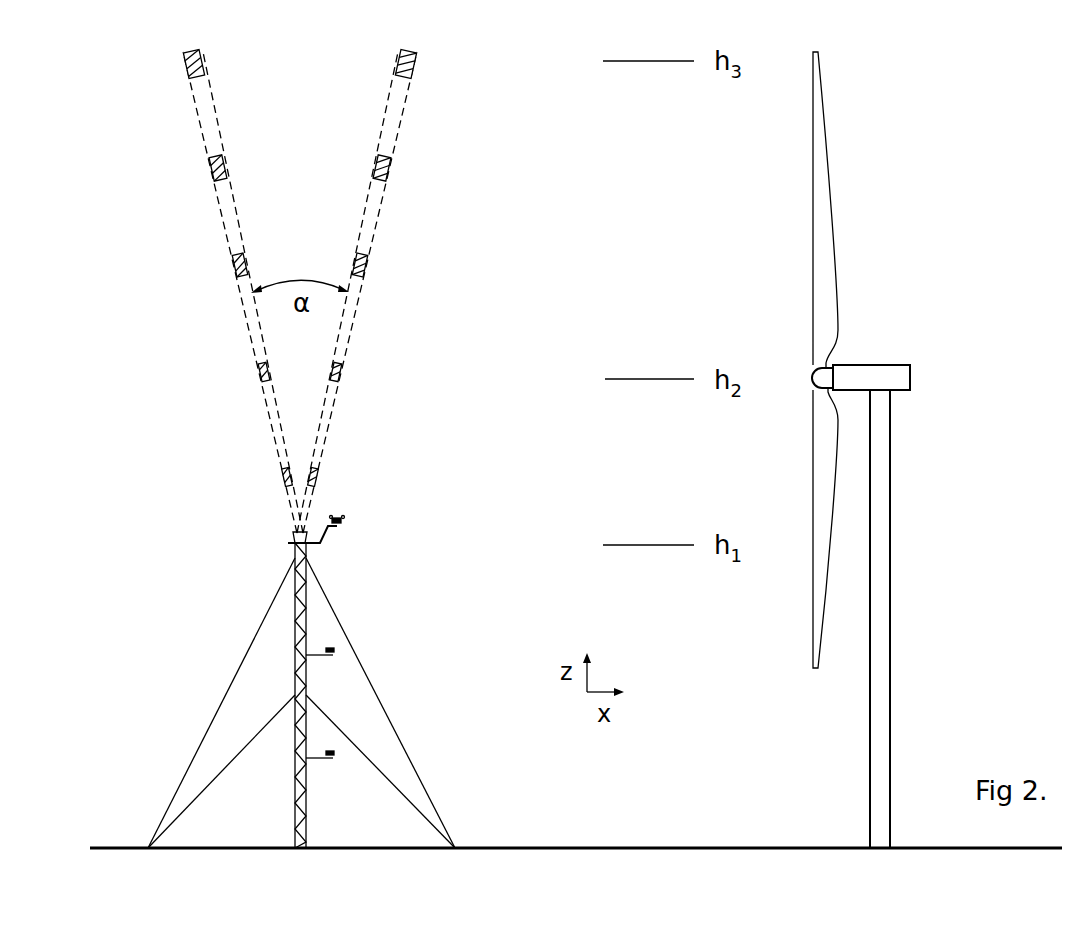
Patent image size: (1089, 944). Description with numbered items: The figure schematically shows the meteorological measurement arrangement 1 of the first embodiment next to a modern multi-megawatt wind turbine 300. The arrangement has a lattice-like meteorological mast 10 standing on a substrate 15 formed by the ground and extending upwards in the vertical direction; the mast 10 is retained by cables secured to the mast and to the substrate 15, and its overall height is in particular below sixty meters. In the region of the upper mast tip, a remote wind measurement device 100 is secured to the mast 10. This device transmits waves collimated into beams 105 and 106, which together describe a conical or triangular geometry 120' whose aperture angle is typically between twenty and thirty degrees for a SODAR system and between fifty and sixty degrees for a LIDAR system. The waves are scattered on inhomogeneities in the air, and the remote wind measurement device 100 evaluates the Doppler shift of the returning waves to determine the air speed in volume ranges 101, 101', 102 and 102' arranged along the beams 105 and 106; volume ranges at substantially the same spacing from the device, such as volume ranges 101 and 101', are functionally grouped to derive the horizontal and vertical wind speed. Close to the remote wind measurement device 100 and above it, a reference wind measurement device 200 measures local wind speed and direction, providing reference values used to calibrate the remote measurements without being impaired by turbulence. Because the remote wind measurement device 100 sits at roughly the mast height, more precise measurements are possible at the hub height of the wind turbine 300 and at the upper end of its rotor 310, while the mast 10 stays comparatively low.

The meteorological measurement arrangement 1 is at (134, 644).
The meteorological mast 10 is at (296, 803).
The substrate 15 is at (700, 848).
The remote wind measurement device 100 is at (293, 535).
The volume range 101 is at (226, 466).
The volume range 101' is at (377, 466).
The volume range 102 is at (202, 365).
The volume range 102' is at (396, 365).
The beam 105 is at (202, 124).
The beam 106 is at (398, 124).
The conical or triangular geometry 120' is at (299, 163).
The reference wind measurement device 200 is at (341, 521).
The wind turbine 300 is at (910, 378).
The rotor 310 is at (828, 243).